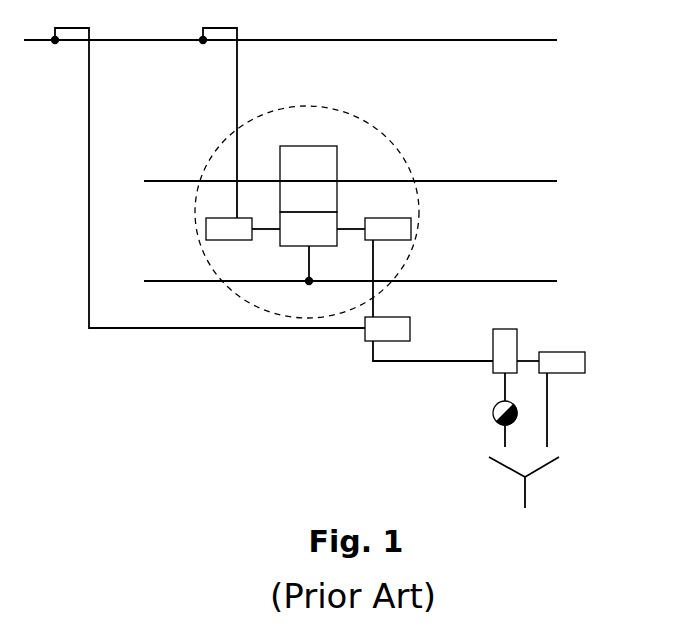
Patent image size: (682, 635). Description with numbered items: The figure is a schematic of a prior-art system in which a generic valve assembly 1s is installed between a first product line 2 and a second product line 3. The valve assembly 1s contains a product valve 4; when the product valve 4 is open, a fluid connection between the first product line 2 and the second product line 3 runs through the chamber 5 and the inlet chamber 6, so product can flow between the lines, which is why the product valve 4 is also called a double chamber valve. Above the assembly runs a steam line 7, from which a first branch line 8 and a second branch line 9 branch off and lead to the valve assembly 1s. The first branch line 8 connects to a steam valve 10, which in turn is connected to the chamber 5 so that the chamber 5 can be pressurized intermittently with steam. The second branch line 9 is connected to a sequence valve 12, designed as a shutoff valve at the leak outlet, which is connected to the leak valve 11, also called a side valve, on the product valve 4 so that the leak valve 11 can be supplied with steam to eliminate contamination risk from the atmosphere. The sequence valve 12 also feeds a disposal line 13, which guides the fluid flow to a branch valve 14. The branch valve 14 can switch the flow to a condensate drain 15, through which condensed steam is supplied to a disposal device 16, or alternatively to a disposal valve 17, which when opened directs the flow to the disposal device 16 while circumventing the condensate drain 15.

The valve assembly 1s is at (412, 165).
The first product line 2 is at (532, 181).
The second product line 3 is at (530, 281).
The product valve 4 is at (280, 166).
The chamber 5 is at (305, 238).
The inlet chamber 6 is at (320, 168).
The steam line 7 is at (522, 40).
The first branch line 8 is at (238, 99).
The second branch line 9 is at (89, 112).
The steam valve 10 is at (223, 229).
The leak valve 11 is at (398, 230).
The sequence valve 12 is at (387, 330).
The disposal line 13 is at (370, 350).
The branch valve 14 is at (508, 340).
The condensate drain 15 is at (492, 408).
The disposal device 16 is at (527, 483).
The disposal valve 17 is at (568, 361).